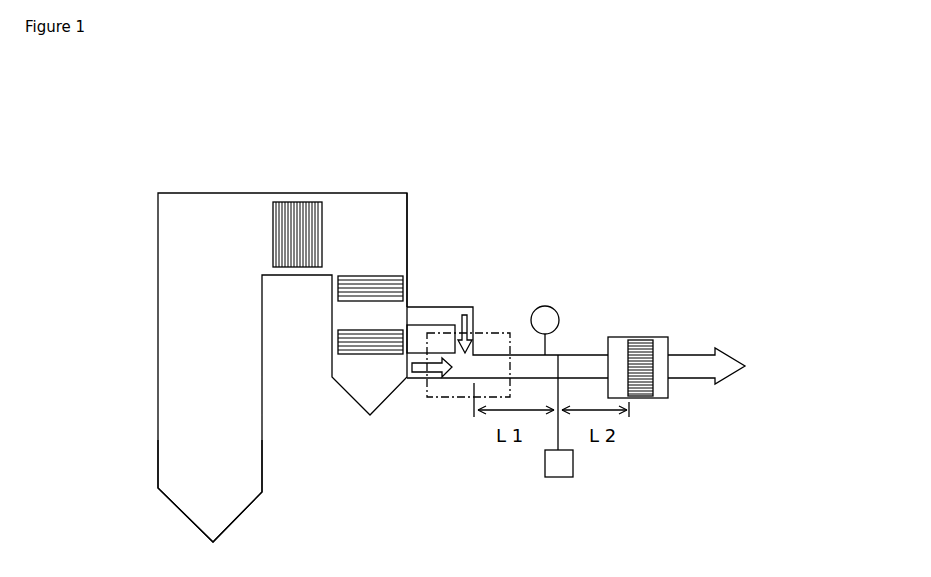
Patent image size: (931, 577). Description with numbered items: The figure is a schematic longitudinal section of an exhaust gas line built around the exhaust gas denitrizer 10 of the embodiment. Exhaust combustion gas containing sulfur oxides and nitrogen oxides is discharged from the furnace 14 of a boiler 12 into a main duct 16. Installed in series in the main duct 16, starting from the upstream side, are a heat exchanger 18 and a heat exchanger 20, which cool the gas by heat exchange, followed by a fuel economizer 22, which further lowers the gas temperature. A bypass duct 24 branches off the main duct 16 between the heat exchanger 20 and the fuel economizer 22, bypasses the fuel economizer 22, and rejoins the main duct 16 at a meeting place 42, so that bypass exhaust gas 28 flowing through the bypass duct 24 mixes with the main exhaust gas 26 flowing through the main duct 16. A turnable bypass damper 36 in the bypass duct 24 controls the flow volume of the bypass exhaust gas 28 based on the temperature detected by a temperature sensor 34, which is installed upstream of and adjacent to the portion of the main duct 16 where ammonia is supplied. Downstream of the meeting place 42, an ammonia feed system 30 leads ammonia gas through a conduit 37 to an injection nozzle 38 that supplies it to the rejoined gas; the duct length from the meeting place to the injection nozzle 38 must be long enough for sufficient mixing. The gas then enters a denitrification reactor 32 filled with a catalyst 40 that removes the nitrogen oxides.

The exhaust gas denitrizer 10 is at (173, 104).
The boiler 12 is at (158, 315).
The furnace 14 is at (193, 395).
The main duct 16 is at (408, 202).
The heat exchanger 18 is at (300, 200).
The heat exchanger 20 is at (372, 275).
The fuel economizer 22 is at (337, 343).
The bypass duct 24 is at (468, 328).
The main exhaust gas 26 is at (412, 377).
The bypass exhaust gas 28 is at (472, 330).
The ammonia feed system 30 is at (573, 468).
The denitrification reactor 32 is at (655, 398).
The temperature sensor 34 is at (557, 307).
The bypass damper 36 is at (421, 318).
The conduit 37 is at (558, 433).
The injection nozzle 38 is at (558, 362).
The catalyst 40 is at (640, 338).
The meeting place 42 is at (430, 400).